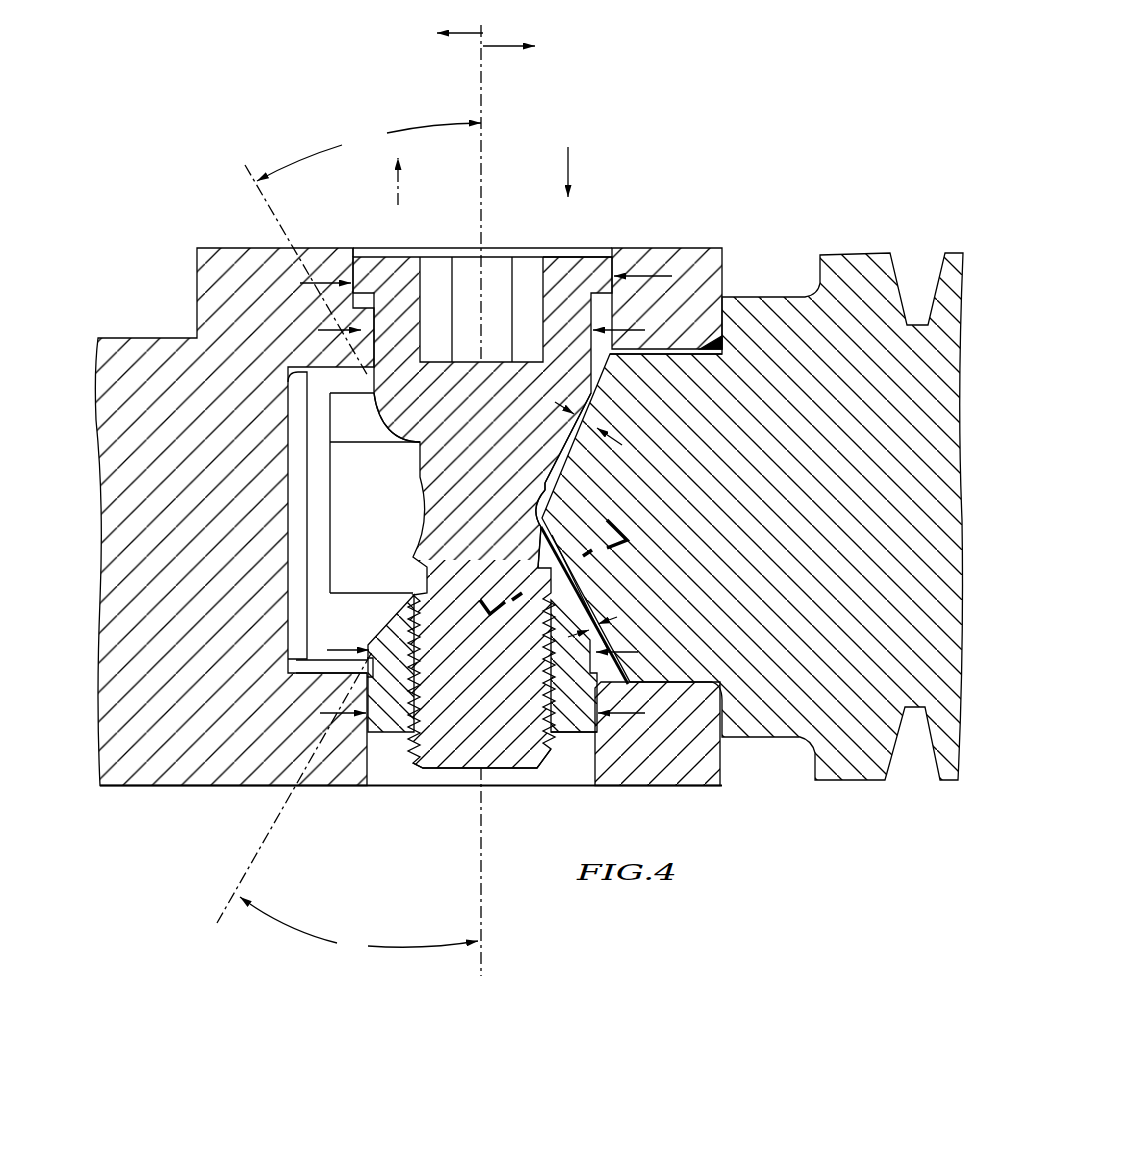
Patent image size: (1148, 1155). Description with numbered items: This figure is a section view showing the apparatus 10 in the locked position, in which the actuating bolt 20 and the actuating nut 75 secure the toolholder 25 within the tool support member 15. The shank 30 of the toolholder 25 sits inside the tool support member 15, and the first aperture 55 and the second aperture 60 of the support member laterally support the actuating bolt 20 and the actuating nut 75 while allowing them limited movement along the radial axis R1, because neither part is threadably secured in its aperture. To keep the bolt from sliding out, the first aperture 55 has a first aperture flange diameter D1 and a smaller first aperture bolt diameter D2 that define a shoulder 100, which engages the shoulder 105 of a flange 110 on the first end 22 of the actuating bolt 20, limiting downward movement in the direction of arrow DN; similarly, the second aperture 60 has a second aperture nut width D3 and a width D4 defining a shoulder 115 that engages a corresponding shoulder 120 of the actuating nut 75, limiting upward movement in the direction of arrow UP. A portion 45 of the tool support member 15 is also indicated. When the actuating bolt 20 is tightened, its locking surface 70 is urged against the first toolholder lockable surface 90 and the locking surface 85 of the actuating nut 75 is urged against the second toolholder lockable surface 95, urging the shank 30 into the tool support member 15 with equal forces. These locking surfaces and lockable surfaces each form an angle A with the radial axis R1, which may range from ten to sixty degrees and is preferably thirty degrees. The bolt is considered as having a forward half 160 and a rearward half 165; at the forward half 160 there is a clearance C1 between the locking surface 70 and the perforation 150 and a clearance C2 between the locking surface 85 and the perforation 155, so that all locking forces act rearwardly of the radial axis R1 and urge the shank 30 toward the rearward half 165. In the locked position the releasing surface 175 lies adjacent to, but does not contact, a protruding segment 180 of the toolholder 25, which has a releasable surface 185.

The seal assembly (section indicator) 10 is at (577, 586).
The tool support member 15 is at (250, 248).
The actuating bolt 20 is at (620, 262).
The first end 22 is at (608, 255).
The toolholder 25 is at (855, 253).
The shank 30 is at (302, 382).
The lip 45 is at (722, 300).
The first aperture 55 is at (365, 248).
The second aperture 60 is at (396, 786).
The locking surface 70 is at (385, 443).
The actuating nut 75 is at (577, 735).
The locking surface 85 is at (395, 593).
The first toolholder lockable surface 90 is at (385, 393).
The second toolholder lockable surface 95 is at (415, 645).
The shoulder 100 is at (372, 315).
The shoulder 105 is at (355, 300).
The flange 110 is at (600, 257).
The shoulder 115 is at (360, 676).
The shoulder 120 is at (355, 662).
The perforation 150 is at (560, 250).
The perforation 155 is at (552, 538).
The forward half 160 is at (528, 45).
The rearward half 165 is at (438, 32).
The releasing surface 175 is at (543, 515).
The protruding segment 180 is at (538, 540).
The releasable surface 185 is at (540, 545).
The angle A is at (360, 541).
The radial axis R1 is at (483, 160).
The arrow UP is at (400, 194).
The arrow DN is at (569, 156).
The first aperture flange diameter D1 is at (653, 275).
The first aperture bolt diameter D2 is at (631, 330).
The second aperture nut width D3 is at (634, 713).
The width D4 is at (629, 652).
The clearance C1 is at (598, 432).
The clearance C2 is at (605, 618).